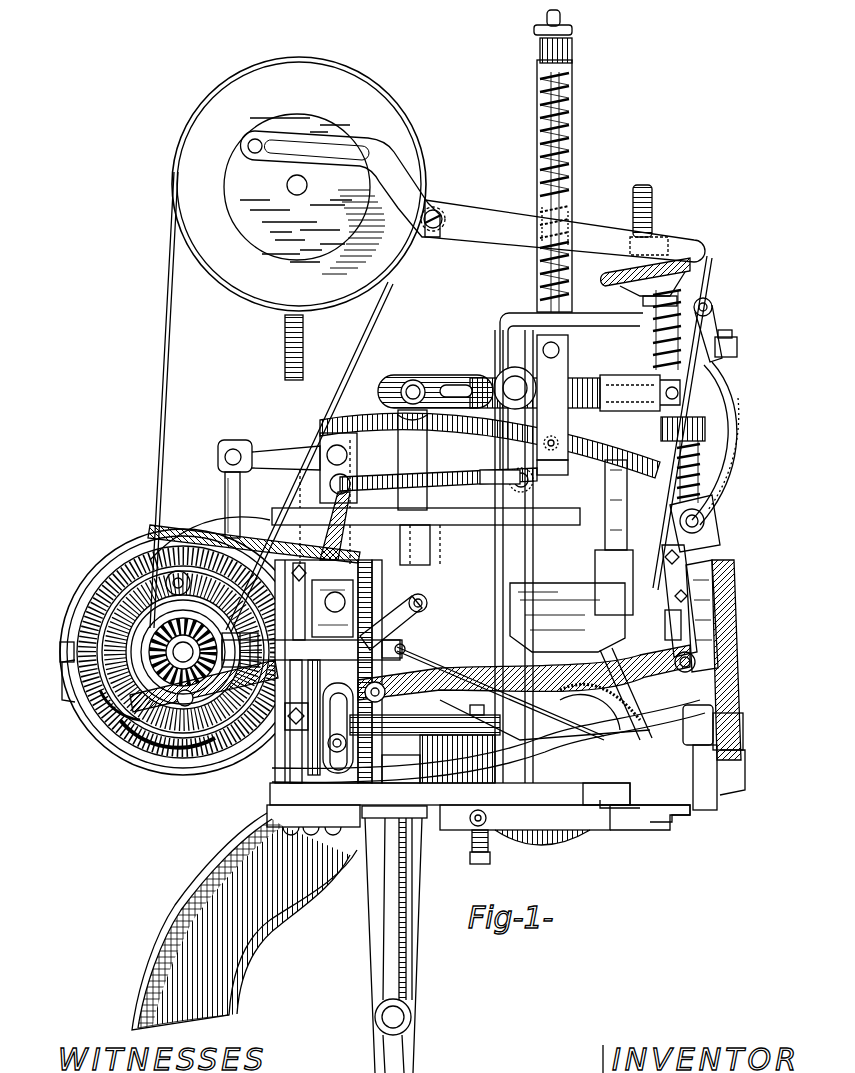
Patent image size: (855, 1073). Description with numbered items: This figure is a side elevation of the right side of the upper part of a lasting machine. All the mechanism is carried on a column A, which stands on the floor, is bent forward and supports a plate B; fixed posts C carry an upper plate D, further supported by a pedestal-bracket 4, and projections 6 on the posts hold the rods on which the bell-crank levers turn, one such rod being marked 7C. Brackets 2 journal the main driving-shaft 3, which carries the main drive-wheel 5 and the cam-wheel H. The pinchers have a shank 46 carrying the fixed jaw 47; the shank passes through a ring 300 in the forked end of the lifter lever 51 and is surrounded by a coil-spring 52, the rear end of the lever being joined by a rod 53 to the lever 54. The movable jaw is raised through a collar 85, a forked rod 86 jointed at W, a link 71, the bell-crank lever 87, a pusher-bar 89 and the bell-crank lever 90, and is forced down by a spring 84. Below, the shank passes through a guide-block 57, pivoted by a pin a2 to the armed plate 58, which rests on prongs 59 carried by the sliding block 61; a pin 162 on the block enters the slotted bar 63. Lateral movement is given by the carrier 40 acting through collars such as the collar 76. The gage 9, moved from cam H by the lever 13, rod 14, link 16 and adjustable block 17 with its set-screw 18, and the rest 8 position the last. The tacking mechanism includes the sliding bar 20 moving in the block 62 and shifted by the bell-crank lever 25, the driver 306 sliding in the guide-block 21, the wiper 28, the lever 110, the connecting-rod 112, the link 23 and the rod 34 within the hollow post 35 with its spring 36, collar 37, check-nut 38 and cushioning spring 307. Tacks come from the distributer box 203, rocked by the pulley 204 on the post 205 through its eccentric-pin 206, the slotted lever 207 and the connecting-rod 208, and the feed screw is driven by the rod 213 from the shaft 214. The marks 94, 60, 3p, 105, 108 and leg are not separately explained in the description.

The pulley 204 is at (243, 290).
The eccentric-pin 206 is at (255, 138).
The lever 207 is at (462, 215).
The hollow post 35 is at (572, 118).
The coiled spring 36 is at (560, 136).
The collar 37 is at (572, 33).
The check-nut 38 is at (572, 52).
The connecting-rod 208 is at (703, 278).
The link 71 is at (715, 320).
The joint W is at (738, 347).
The forked rod 86 is at (742, 395).
The ring or collar 300 is at (738, 410).
The collar 85 is at (708, 522).
The spring 84 is at (700, 470).
The coil-spring 52 is at (652, 340).
The lever 51 is at (600, 376).
The slide 7C is at (612, 378).
The rod 34 is at (590, 378).
The bell-crank lever 87 is at (500, 343).
The spring 307 is at (510, 362).
The rod 53 is at (425, 436).
The post 94 is at (356, 418).
The upper plate D is at (458, 530).
The pusher-bar 89 is at (445, 488).
The bell-crank lever 90 is at (357, 498).
The lever 110 is at (253, 444).
The connecting-rod 112 is at (225, 478).
The lever 13 is at (178, 528).
The main drive-wheel 5 is at (190, 755).
The cam-wheel H is at (70, 700).
The main driving-shaft 3 is at (108, 722).
The brackets 2 is at (272, 640).
The shaft 214 is at (400, 645).
The connecting-rod 213 is at (430, 662).
The post 205 is at (345, 345).
The pedestal-bracket 4 is at (495, 590).
The link 23 is at (552, 405).
The carrier 40 is at (650, 515).
The guide-block 21 is at (614, 582).
The box 203 is at (568, 583).
The pivot-pin a2 is at (663, 625).
The collar 76 is at (700, 560).
The guide-block 57 is at (720, 612).
The pivot 60 is at (696, 656).
The shank 46 is at (738, 688).
The driver 306 is at (746, 725).
The rest 8 is at (705, 777).
The fixed jaw 47 is at (738, 790).
The armed plate 58 is at (524, 667).
The prongs 59 is at (488, 729).
The link 3p is at (626, 694).
The gear segment 108 is at (568, 688).
The rod 14 is at (472, 678).
The posts C is at (275, 772).
The bell-crank lever 25 is at (337, 775).
The guide 105 is at (337, 730).
The projections 6 is at (372, 585).
The lever 54 is at (395, 604).
The pin 162 is at (470, 708).
The block 61 is at (457, 759).
The slotted bar 63 is at (401, 758).
The block 62 is at (450, 794).
The sliding bar 20 is at (586, 793).
The plate B is at (455, 830).
The block 17 is at (464, 829).
The set-screw 18 is at (488, 860).
The link 16 is at (547, 845).
The gage or guide-foot 9 is at (660, 825).
The wiper 28 is at (690, 810).
The element leg is at (394, 939).
The column A is at (168, 884).